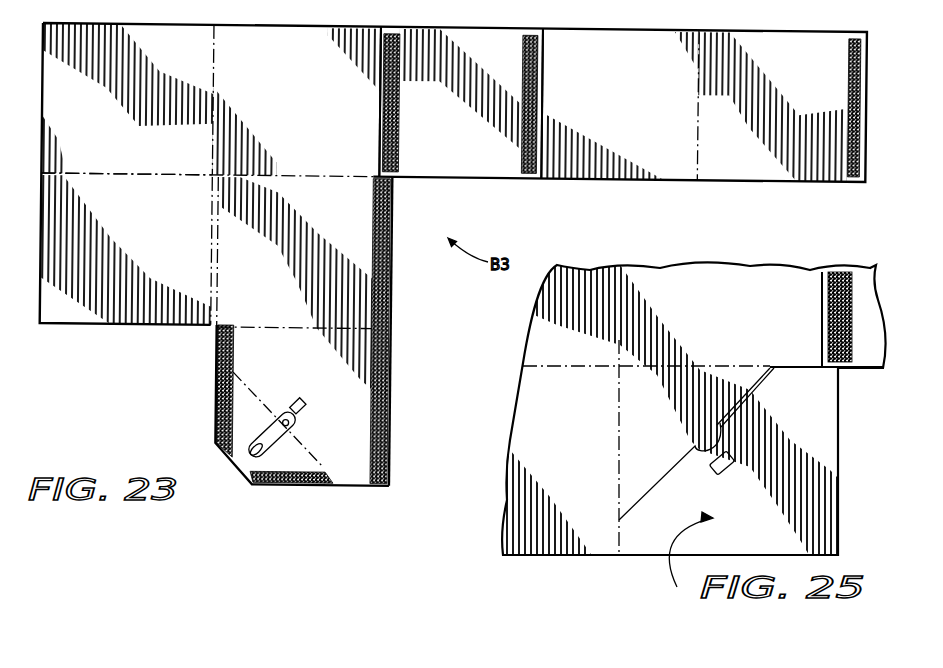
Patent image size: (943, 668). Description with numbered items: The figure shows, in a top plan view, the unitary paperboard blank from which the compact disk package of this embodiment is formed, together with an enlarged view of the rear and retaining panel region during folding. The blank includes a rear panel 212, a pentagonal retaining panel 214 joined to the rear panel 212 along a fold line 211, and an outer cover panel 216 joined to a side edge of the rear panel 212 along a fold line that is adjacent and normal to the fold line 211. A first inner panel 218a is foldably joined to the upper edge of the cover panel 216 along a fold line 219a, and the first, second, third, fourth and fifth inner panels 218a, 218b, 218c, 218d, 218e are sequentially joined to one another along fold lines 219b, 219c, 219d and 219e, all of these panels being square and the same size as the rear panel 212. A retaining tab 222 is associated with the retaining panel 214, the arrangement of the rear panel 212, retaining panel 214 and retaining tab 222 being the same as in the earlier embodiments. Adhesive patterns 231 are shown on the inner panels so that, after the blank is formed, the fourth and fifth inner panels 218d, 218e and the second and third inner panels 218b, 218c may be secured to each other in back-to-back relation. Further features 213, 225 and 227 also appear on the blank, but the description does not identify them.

In FIG. 23, the fold line 211 is at (312, 325).
In FIG. 23, the rear panel 212 is at (312, 262).
In FIG. 25, the rear panel 212 is at (676, 432).
In FIG. 23, the adhesive strip 213 is at (220, 386).
In FIG. 23, the retaining panel 214 is at (325, 374).
In FIG. 25, the retaining panel 214 is at (764, 508).
In FIG. 23, the outer cover panel 216 is at (142, 262).
In FIG. 23, the first inner panel 218a is at (153, 117).
In FIG. 23, the second inner panel 218b is at (324, 118).
In FIG. 23, the third inner panel 218c is at (480, 120).
In FIG. 23, the fourth inner panel 218d is at (635, 117).
In FIG. 23, the fifth inner panel 218e is at (803, 120).
In FIG. 23, the fold line 219a is at (128, 172).
In FIG. 23, the fold line 219b is at (215, 50).
In FIG. 23, the fold line 219c is at (381, 134).
In FIG. 23, the fold line 219d is at (545, 54).
In FIG. 23, the fold line 219e is at (700, 134).
In FIG. 23, the retaining tab 222 is at (309, 398).
In FIG. 23, the adhesive strip 225 is at (251, 469).
In FIG. 23, the spring latch 227 is at (297, 422).
In FIG. 23, the adhesive patterns 231 is at (524, 143).